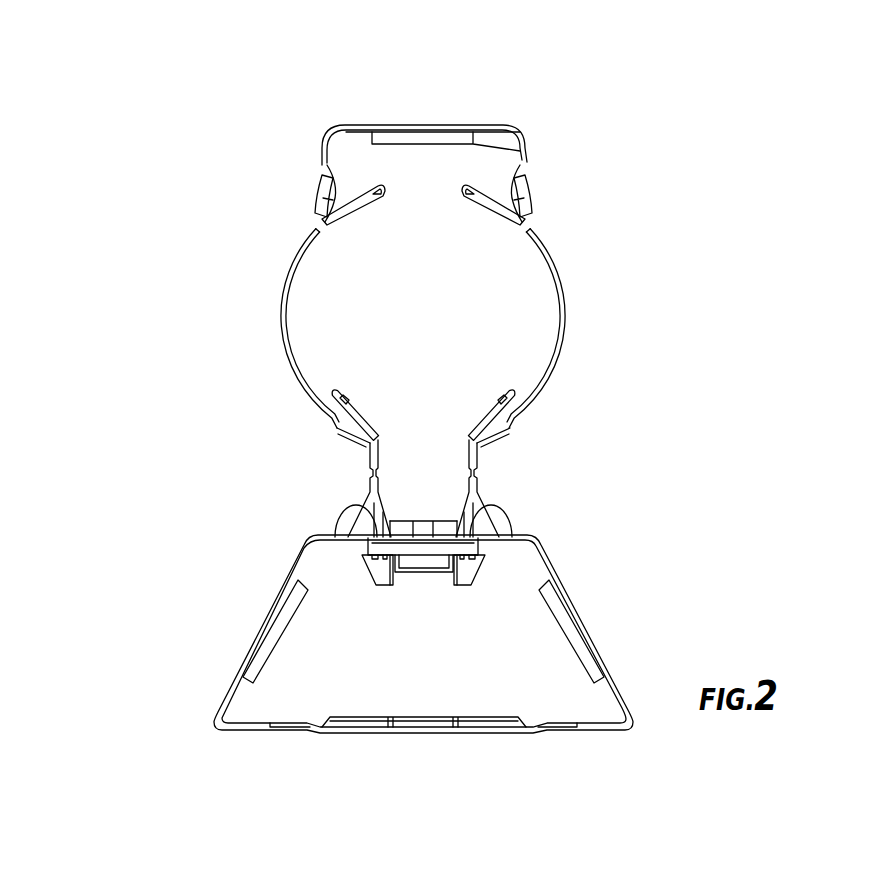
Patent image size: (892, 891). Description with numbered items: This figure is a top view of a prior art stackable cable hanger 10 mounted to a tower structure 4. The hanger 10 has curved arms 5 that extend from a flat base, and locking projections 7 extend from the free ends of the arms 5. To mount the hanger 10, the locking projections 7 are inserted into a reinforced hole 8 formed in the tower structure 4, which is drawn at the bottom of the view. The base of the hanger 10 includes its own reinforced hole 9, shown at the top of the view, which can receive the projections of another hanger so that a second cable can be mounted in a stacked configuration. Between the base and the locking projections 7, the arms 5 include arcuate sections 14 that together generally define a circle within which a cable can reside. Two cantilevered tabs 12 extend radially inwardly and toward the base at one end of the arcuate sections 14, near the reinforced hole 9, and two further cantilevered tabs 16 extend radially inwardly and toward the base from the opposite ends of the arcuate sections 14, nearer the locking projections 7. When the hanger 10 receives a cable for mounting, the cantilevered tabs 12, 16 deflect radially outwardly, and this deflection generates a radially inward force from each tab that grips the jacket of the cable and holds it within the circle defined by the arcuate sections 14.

The tower structure 4 is at (583, 731).
The curved arms 5 is at (598, 257).
The locking projections 7 is at (373, 568).
The reinforced hole 8 is at (447, 550).
The reinforced hole 9 is at (392, 143).
The cable hanger 10 is at (657, 337).
The cantilevered tabs 12 is at (464, 198).
The arcuate sections 14 is at (282, 337).
The cantilevered tabs 16 is at (487, 412).